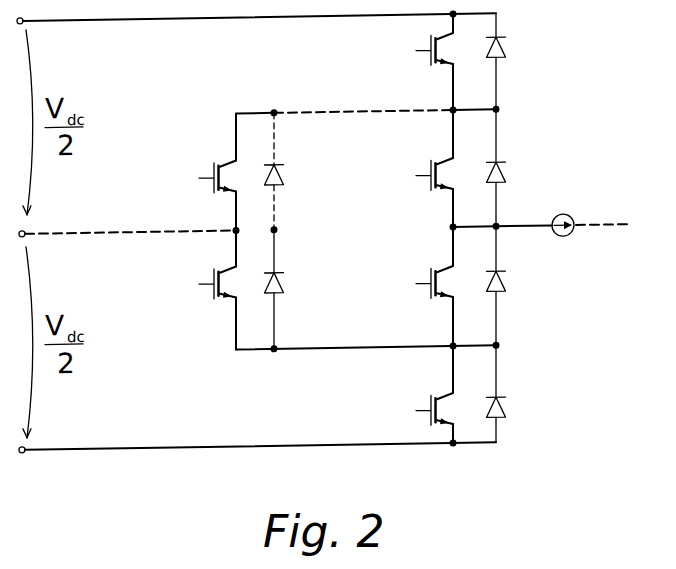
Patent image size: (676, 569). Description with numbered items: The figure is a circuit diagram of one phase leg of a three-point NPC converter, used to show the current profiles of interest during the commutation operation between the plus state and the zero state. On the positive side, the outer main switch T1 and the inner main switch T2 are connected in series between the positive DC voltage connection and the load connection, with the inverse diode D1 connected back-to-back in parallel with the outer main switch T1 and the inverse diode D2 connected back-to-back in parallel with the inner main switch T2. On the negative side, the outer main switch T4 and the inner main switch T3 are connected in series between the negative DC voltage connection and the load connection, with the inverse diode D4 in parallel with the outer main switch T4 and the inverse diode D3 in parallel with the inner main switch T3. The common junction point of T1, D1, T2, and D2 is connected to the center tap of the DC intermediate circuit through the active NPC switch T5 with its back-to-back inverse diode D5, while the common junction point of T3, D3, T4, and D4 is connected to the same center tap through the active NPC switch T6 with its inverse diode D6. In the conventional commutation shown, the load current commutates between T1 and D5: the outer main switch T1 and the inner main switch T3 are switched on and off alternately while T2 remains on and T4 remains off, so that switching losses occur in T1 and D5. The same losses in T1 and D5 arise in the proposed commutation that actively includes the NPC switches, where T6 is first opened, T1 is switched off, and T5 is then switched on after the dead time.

The outer main switch T1 is at (405, 52).
The inner main switch T2 is at (405, 175).
The inner main switch T3 is at (405, 280).
The outer main switch T4 is at (405, 406).
The active NPC switch T5 is at (190, 174).
The active NPC switch T6 is at (192, 284).
The inverse diode D1 is at (520, 48).
The inverse diode D2 is at (524, 165).
The inverse diode D3 is at (525, 280).
The inverse diode D4 is at (525, 401).
The inverse diode D5 is at (298, 175).
The inverse diode D6 is at (301, 278).